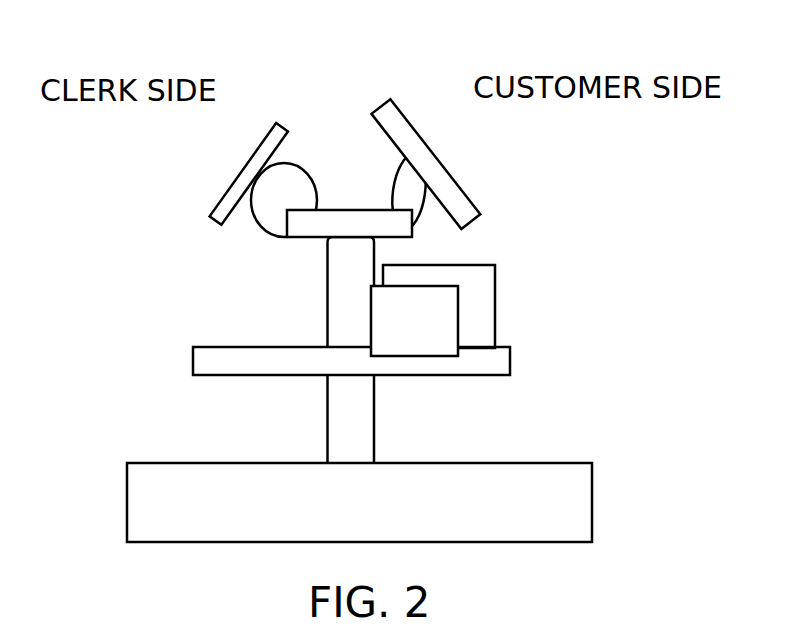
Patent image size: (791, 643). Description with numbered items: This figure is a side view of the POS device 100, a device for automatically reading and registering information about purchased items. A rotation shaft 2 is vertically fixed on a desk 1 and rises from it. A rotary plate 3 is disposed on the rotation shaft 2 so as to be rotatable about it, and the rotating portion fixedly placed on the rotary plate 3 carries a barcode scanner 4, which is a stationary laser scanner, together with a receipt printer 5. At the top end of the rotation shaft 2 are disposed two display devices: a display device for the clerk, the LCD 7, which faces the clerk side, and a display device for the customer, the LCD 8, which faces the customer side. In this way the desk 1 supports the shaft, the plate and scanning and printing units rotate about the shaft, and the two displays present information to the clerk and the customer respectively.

The POS device 100 is at (429, 60).
The desk 1 is at (585, 519).
The rotation shaft 2 is at (367, 434).
The rotary plate 3 is at (480, 375).
The barcode scanner 4 is at (477, 298).
The receipt printer 5 is at (395, 308).
The display device for clerk (LCD) 7 is at (228, 190).
The display device for customer (LCD) 8 is at (428, 162).